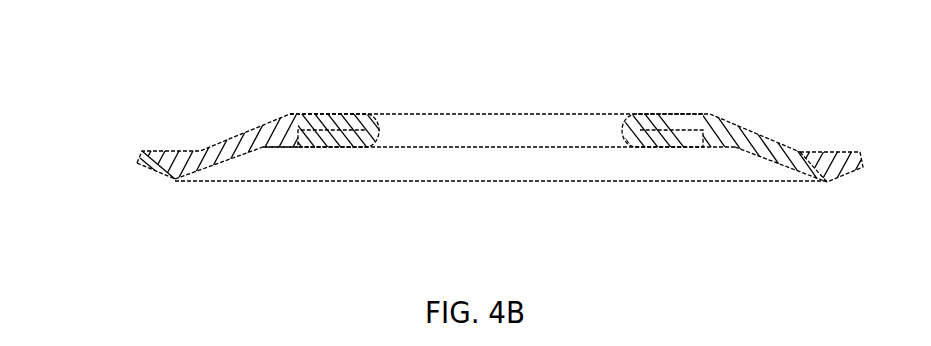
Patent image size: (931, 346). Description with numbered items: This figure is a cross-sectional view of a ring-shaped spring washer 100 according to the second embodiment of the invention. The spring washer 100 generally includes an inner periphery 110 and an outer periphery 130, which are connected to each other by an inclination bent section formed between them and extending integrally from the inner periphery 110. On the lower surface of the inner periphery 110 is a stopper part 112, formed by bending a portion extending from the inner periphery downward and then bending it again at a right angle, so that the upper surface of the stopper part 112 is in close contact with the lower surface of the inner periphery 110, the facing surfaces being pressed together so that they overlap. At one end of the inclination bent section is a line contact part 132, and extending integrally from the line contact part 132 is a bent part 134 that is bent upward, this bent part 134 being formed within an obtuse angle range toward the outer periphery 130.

The spring washer 100 is at (200, 70).
The inner periphery 110 is at (393, 95).
The stopper part 112 is at (342, 147).
The outer periphery 130 is at (104, 143).
The line contact part 132 is at (176, 182).
The bent part 134 is at (152, 166).